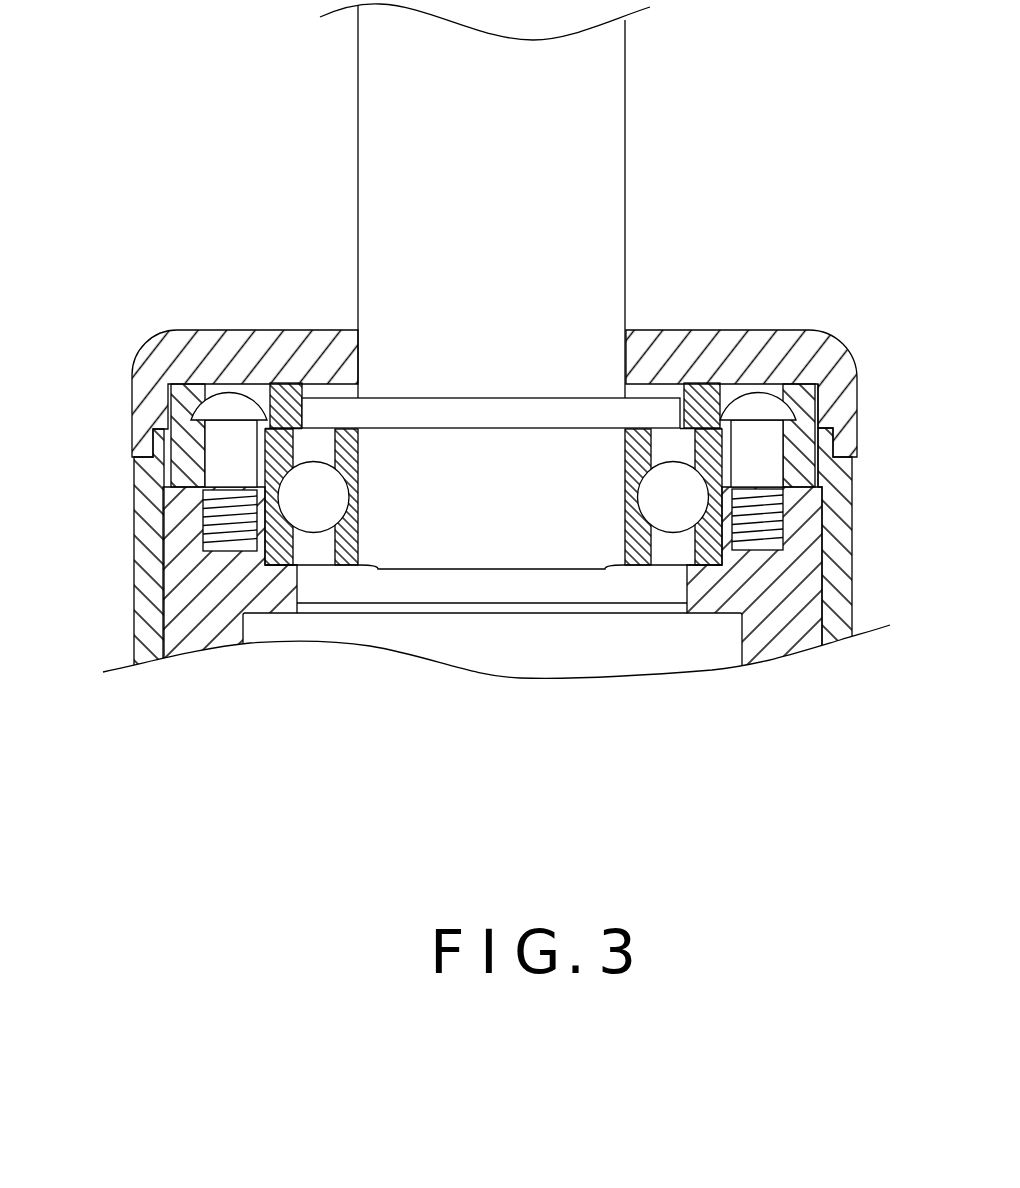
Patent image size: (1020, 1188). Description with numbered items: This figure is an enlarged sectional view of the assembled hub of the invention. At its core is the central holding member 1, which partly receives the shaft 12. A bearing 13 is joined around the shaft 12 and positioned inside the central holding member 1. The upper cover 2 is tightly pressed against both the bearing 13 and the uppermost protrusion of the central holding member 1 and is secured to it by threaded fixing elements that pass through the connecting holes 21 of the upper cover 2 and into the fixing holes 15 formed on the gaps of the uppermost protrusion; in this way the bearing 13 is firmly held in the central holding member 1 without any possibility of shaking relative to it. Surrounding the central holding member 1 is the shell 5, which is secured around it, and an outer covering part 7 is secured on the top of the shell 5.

The central holding member 1 is at (782, 583).
The upper cover 2 is at (190, 430).
The shell 5 is at (163, 593).
The outer covering part 7 is at (271, 362).
The shaft 12 is at (593, 103).
The bearing 13 is at (313, 503).
The fixing holes 15 is at (203, 513).
The connecting holes 21 is at (198, 390).